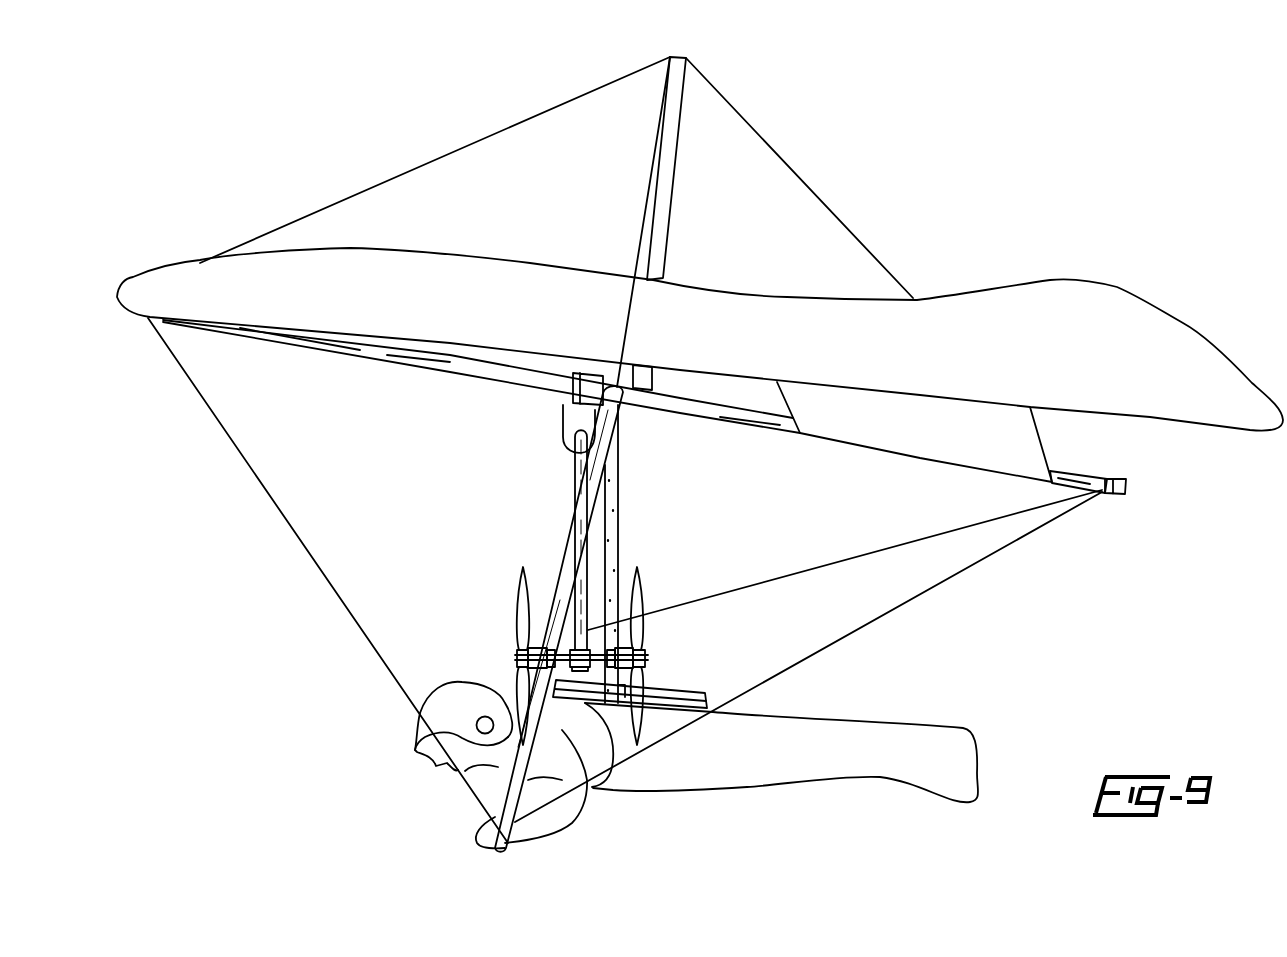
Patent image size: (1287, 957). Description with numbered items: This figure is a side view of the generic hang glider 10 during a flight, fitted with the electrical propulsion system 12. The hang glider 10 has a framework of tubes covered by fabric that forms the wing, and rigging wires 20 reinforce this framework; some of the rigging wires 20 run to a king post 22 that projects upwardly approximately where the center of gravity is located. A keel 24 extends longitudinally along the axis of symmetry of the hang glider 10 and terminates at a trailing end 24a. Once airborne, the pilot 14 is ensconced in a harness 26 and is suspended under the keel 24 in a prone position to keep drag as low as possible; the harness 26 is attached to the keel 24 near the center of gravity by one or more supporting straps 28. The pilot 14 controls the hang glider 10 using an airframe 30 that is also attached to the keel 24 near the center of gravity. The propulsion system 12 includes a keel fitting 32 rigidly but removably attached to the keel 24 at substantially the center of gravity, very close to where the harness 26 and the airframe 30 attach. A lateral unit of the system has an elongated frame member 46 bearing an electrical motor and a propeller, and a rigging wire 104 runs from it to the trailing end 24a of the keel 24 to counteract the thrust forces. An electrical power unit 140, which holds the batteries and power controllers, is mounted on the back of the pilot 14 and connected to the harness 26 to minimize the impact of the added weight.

The hang glider 10 is at (700, 457).
The electrical propulsion system 12 is at (620, 619).
The pilot 14 is at (546, 821).
The rigging wires 20 is at (352, 196).
The king post 22 is at (678, 140).
The keel 24 is at (1088, 471).
The trailing end of the keel 24a is at (1123, 495).
The harness 26 is at (808, 770).
The supporting straps 28 is at (622, 484).
The airframe 30 is at (512, 806).
The keel fitting 32 is at (585, 402).
The elongated frame member 46 is at (586, 580).
The rigging wire 104 is at (987, 523).
The electrical power unit 140 is at (690, 684).